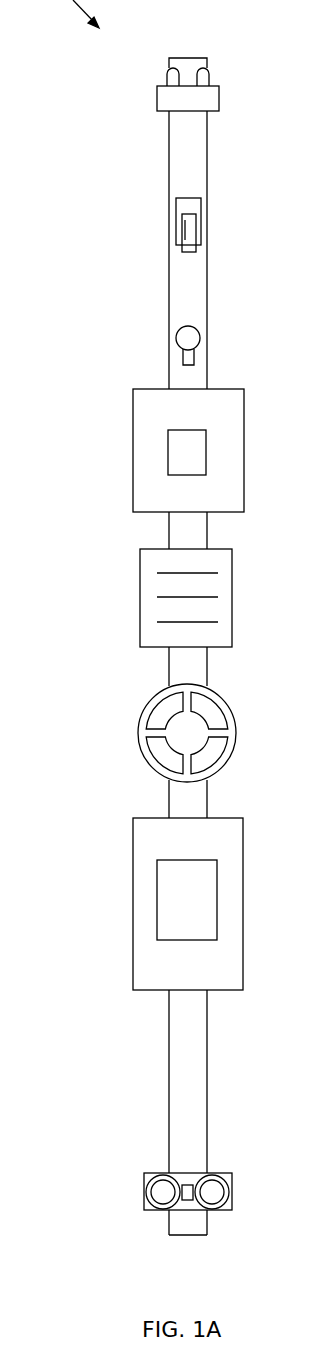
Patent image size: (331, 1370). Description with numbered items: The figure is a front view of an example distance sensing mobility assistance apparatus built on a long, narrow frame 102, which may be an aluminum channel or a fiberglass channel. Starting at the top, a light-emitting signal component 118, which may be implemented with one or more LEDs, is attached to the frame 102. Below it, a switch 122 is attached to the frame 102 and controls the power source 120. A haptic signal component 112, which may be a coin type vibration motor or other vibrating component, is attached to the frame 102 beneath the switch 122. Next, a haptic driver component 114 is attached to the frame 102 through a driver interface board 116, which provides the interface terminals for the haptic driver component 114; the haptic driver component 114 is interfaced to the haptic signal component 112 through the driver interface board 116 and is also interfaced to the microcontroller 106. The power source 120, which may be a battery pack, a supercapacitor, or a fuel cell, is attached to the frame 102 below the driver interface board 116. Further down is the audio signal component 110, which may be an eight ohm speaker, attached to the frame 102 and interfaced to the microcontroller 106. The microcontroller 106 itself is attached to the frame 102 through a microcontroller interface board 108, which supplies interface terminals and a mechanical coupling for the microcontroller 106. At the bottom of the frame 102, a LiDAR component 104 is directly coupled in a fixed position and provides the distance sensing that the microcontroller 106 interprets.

The frame 102 is at (180, 151).
The LiDAR component 104 is at (147, 1192).
The microcontroller 106 is at (163, 904).
The microcontroller interface board 108 is at (163, 968).
The audio signal component 110 is at (138, 736).
The haptic signal component 112 is at (183, 338).
The haptic driver component 114 is at (173, 443).
The driver interface board 116 is at (163, 493).
The light-emitting signal component 118 is at (165, 100).
The power source 120 is at (147, 585).
The switch 122 is at (178, 233).